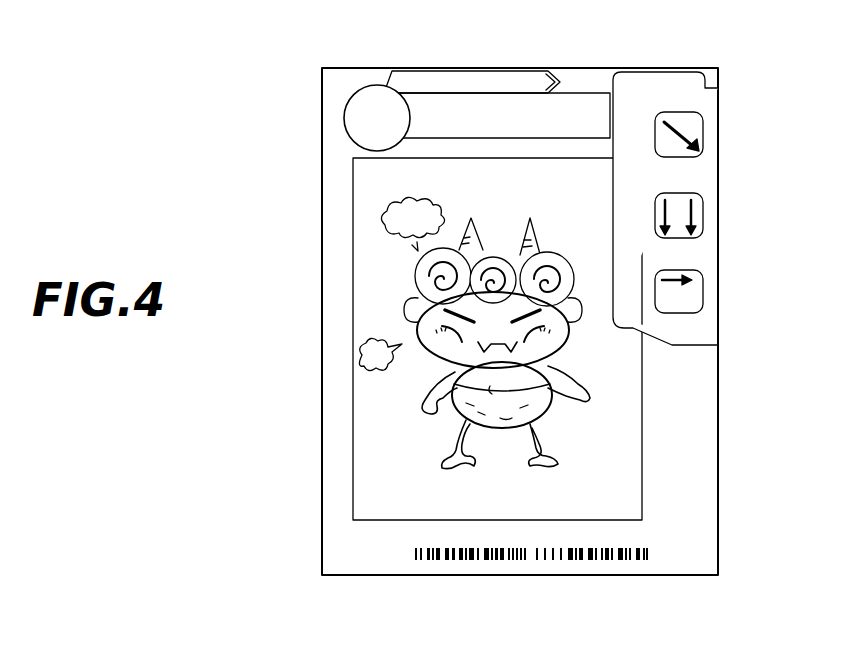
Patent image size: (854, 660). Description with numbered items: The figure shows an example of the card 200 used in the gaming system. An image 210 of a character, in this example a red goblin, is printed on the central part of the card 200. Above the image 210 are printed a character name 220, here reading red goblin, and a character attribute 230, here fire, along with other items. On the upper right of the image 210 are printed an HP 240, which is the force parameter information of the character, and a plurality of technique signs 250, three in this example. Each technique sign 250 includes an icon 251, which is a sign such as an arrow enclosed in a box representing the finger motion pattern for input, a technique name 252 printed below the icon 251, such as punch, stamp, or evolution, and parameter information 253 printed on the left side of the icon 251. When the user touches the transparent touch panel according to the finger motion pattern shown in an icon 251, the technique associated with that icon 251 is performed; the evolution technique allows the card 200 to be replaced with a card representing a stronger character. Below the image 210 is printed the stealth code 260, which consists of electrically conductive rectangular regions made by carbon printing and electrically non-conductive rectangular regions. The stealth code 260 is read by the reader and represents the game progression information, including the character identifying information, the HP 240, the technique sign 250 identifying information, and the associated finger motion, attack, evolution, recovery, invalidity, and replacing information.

The card 200 is at (534, 62).
The image 210 is at (366, 190).
The character name 220 is at (590, 93).
The character attribute 230 is at (365, 86).
The HP 240 is at (645, 80).
The technique sign 250 is at (705, 136).
The icon 251 is at (704, 117).
The technique name 252 is at (700, 175).
The parameter information 253 is at (632, 125).
The stealth code 260 is at (509, 563).